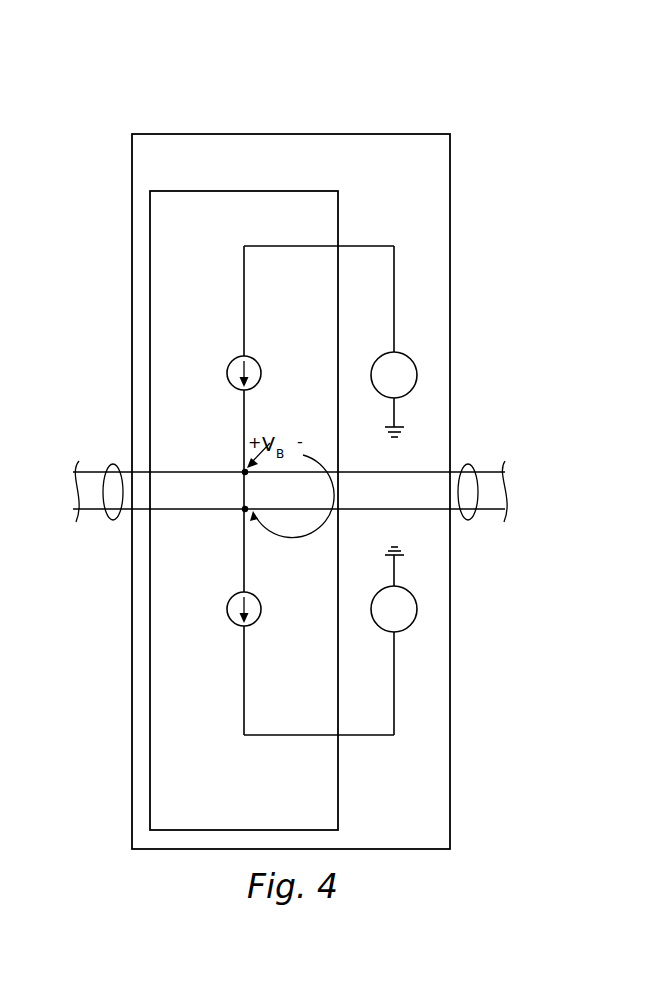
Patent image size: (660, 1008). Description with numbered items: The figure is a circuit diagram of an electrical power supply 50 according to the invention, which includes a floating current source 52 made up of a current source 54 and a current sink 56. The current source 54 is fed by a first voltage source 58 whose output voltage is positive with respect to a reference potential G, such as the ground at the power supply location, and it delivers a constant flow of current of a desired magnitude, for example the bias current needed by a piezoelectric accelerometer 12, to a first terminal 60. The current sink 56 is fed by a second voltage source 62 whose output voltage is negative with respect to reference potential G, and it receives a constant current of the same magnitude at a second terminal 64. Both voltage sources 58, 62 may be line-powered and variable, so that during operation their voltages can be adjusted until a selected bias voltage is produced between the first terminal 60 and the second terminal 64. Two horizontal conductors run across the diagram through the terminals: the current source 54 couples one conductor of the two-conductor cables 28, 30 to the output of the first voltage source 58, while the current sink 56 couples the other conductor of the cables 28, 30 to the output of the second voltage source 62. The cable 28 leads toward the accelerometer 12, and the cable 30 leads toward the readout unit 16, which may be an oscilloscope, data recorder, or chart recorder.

The accelerometer 12 is at (45, 491).
The readout unit 16 is at (546, 490).
The two-conductor cable 28 is at (112, 520).
The two-conductor cable 30 is at (470, 520).
The electrical power supply 50 is at (443, 169).
The floating current source 52 is at (331, 226).
The current source 54 is at (226, 370).
The current sink 56 is at (226, 604).
The first voltage source 58 is at (378, 357).
The first terminal 60 is at (241, 468).
The second voltage source 62 is at (378, 626).
The second terminal 64 is at (241, 513).